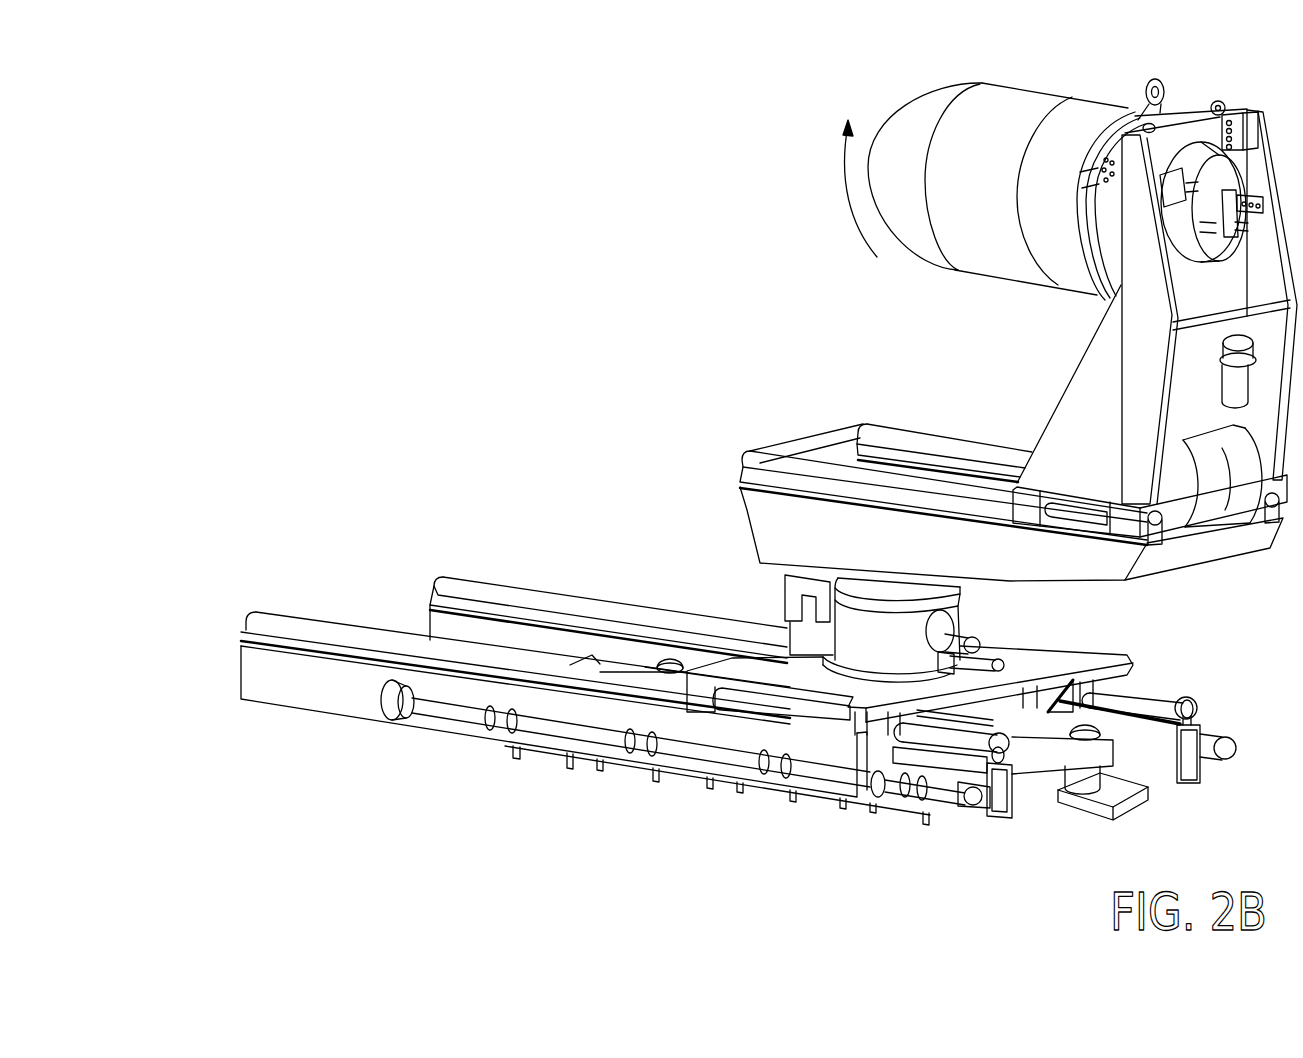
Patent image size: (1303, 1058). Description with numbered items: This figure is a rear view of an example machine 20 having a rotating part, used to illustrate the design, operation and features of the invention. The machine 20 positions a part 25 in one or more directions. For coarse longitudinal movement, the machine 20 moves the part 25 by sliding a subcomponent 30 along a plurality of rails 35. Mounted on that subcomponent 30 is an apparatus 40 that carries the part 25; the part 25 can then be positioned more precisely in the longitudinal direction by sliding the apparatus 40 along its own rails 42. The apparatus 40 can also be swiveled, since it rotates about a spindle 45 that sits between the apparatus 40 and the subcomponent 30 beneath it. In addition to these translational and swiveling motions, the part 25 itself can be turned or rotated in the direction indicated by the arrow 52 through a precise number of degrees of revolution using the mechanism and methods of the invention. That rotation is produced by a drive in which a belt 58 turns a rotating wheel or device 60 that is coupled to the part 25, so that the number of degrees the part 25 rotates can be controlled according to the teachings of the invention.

The machine 20 is at (626, 307).
The part 25 is at (1027, 86).
The subcomponent 30 is at (1043, 652).
The rails 35 is at (485, 582).
The apparatus 40 is at (1068, 452).
The rails 42 is at (915, 440).
The spindle 45 is at (958, 607).
The arrow 52 is at (844, 171).
The belt 58 is at (1118, 222).
The rotating wheel or device 60 is at (1128, 112).